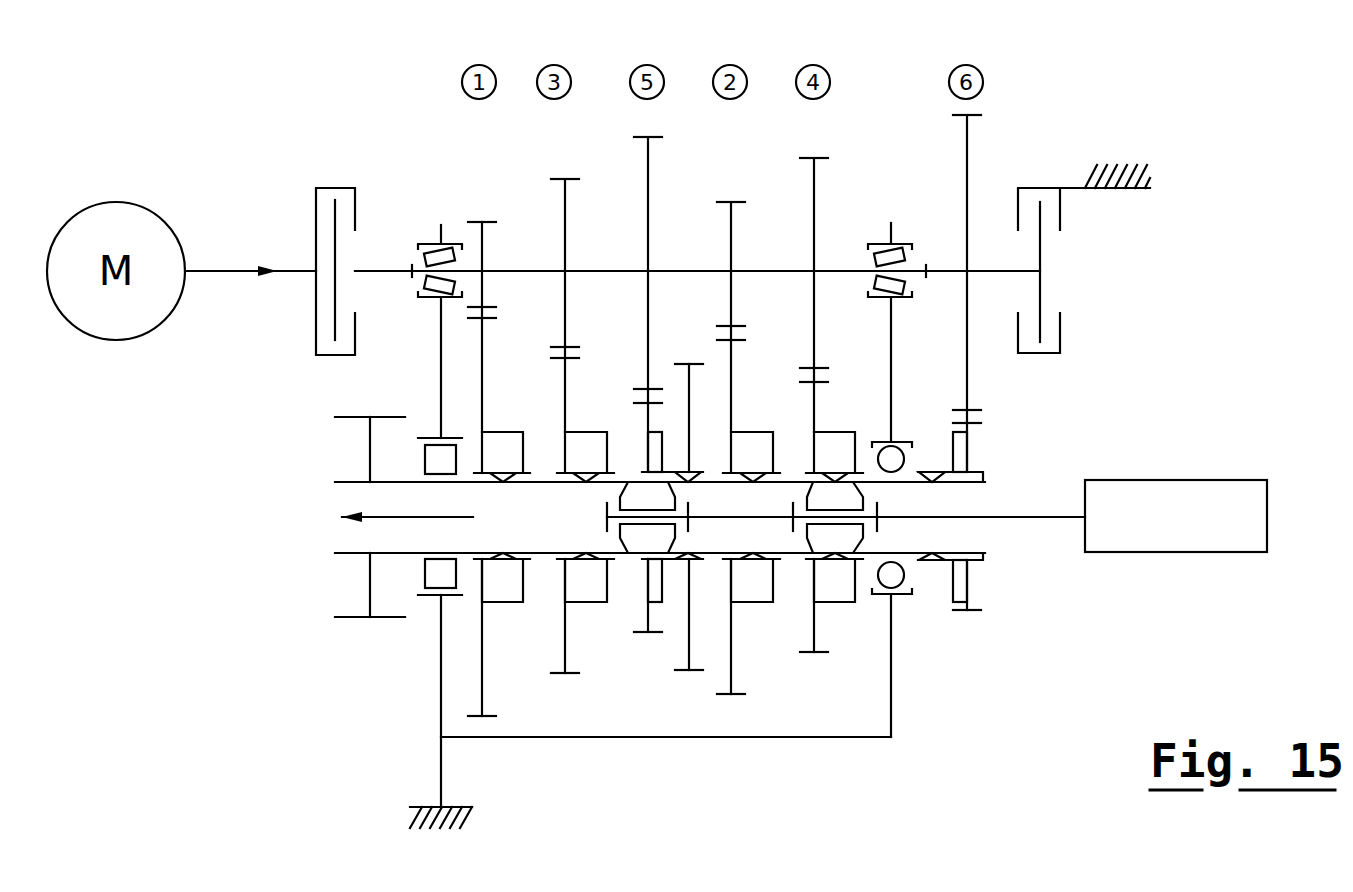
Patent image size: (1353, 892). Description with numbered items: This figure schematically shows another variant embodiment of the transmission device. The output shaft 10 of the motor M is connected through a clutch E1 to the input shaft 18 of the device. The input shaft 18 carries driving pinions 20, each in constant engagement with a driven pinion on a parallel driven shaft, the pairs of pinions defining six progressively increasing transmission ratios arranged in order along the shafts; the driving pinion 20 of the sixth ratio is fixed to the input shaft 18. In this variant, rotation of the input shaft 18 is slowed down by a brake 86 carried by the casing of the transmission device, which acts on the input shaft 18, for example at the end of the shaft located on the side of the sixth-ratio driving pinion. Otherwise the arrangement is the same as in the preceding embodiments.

The output shaft of the motor 10 is at (232, 271).
The clutch E1 is at (330, 188).
The input shaft 18 is at (383, 271).
The driving pinion 20 is at (967, 188).
The brake 86 is at (1060, 332).